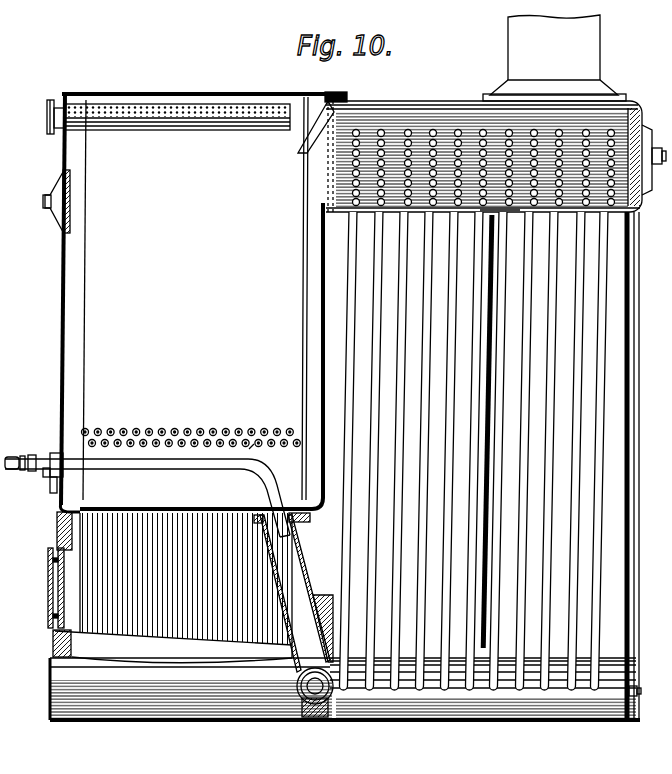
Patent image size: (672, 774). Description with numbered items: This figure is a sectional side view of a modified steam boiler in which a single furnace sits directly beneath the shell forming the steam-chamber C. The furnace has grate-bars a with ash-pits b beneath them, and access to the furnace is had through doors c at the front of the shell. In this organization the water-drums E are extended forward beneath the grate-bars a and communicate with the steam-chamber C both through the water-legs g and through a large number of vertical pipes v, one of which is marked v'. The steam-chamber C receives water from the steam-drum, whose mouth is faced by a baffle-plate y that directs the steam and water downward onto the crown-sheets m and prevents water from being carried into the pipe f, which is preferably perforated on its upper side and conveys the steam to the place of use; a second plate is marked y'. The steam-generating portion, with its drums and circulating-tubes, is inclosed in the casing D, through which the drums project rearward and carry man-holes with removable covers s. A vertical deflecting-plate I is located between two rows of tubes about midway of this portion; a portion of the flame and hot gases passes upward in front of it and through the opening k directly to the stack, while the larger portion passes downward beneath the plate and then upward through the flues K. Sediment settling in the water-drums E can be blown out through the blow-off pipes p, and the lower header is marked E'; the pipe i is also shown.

The steam-chamber C is at (203, 302).
The pipe f is at (168, 122).
The water-legs g is at (302, 143).
The crown-sheets m is at (554, 58).
The steam drum / lower header E' is at (484, 415).
The ash-pits b is at (399, 172).
The deflecting-plate I is at (494, 379).
The opening k is at (496, 216).
The casing D is at (629, 574).
The removable covers s is at (636, 190).
The flues K is at (51, 229).
The supply pipe i is at (147, 495).
The vertical pipes v is at (190, 527).
The nozzle v' is at (245, 452).
The grate-bars a is at (173, 647).
The doors c is at (52, 603).
The water-drums E is at (345, 689).
The baffle-plate y is at (350, 466).
The wall y' is at (613, 716).
The blow-off pipes p is at (2, 407).